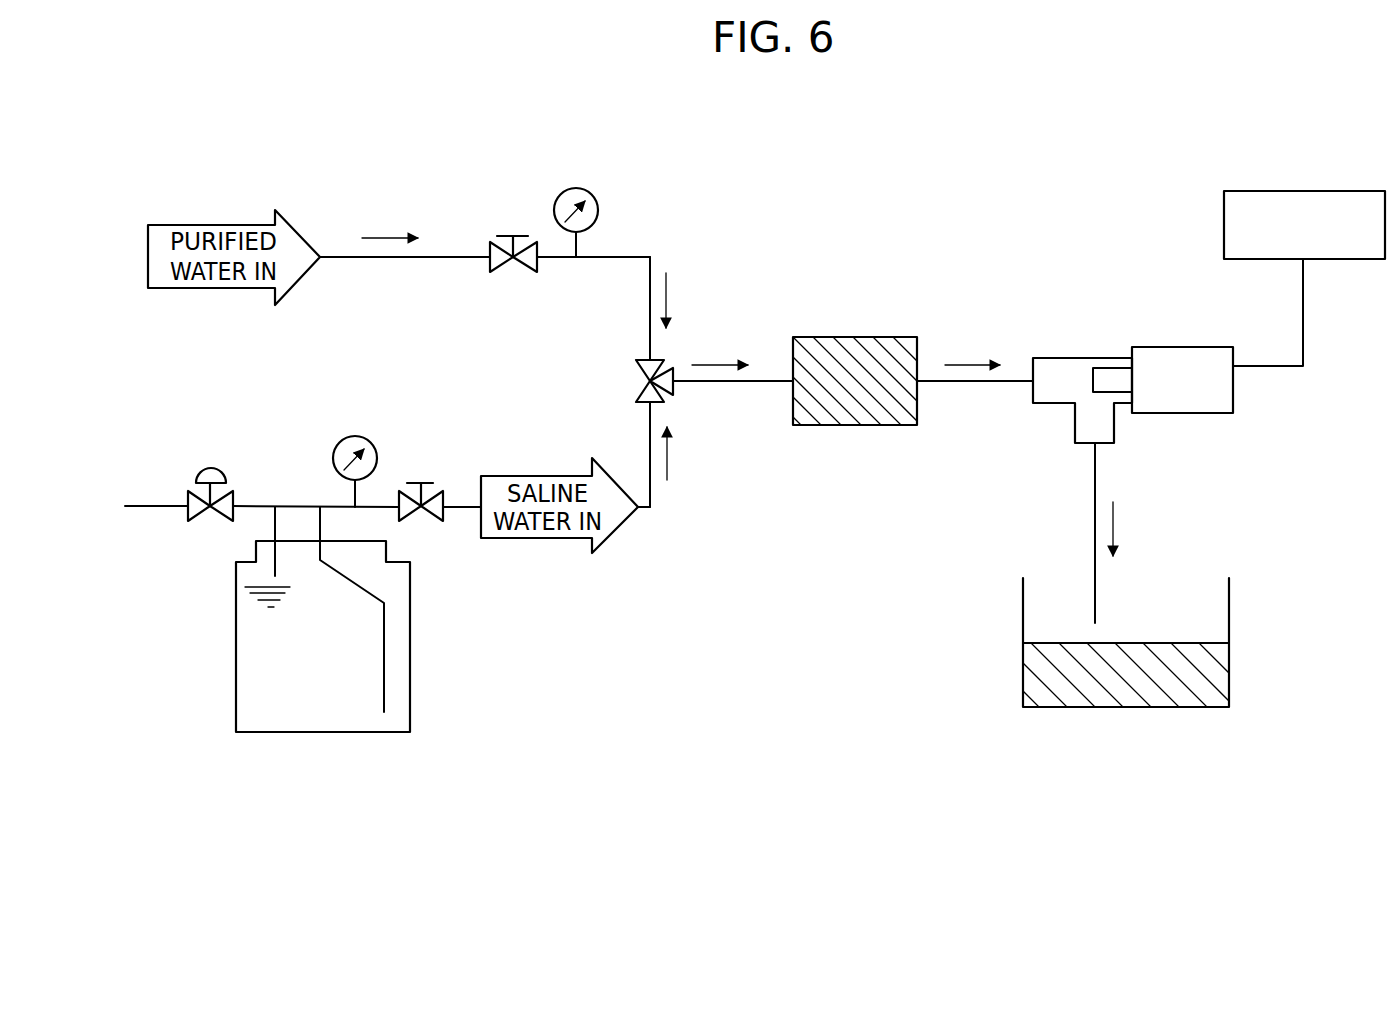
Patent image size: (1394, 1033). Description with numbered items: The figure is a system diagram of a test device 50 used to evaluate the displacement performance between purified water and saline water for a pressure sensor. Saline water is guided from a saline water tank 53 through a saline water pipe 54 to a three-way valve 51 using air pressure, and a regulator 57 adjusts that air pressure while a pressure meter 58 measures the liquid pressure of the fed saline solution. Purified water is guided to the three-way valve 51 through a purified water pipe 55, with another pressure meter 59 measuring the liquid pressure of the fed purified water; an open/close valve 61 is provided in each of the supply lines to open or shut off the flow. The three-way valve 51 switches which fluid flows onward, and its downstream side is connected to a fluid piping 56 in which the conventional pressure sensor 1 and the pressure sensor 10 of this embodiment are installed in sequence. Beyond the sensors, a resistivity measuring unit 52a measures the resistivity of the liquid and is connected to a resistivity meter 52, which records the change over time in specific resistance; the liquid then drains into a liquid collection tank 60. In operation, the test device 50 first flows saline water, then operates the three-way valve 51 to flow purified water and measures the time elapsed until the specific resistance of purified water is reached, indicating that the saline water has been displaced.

The test device 50 is at (1017, 153).
The pressure sensor 1 is at (850, 337).
The pressure sensor 10 is at (853, 343).
The three-way valve 51 is at (636, 375).
The resistivity meter 52 is at (1300, 191).
The resistivity measuring unit 52a is at (1065, 358).
The saline water tank 53 is at (410, 665).
The saline water pipe 54 is at (463, 512).
The purified water pipe 55 is at (443, 262).
The fluid piping 56 is at (752, 387).
The regulator 57 is at (235, 493).
The pressure meter 58 is at (355, 435).
The pressure meter 59 is at (598, 198).
The liquid collection tank 60 is at (1023, 628).
The open/close valve 61 is at (512, 233).